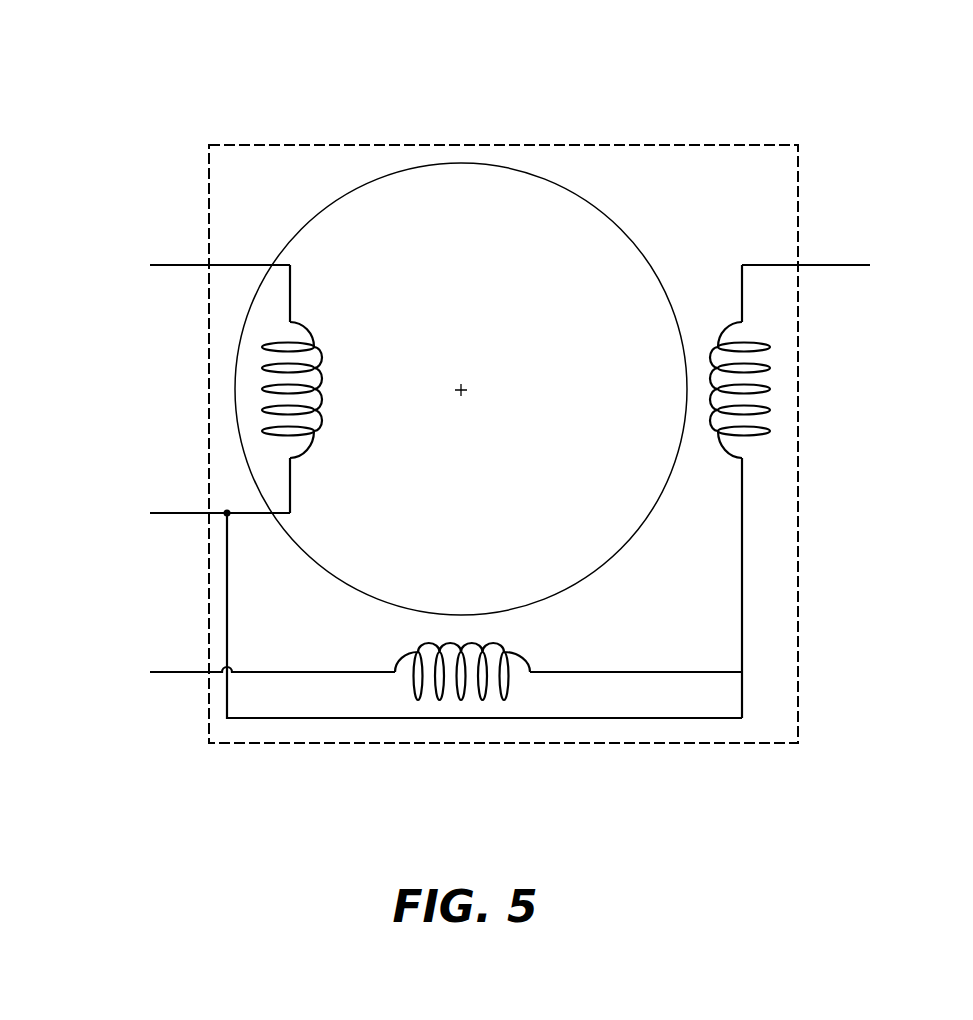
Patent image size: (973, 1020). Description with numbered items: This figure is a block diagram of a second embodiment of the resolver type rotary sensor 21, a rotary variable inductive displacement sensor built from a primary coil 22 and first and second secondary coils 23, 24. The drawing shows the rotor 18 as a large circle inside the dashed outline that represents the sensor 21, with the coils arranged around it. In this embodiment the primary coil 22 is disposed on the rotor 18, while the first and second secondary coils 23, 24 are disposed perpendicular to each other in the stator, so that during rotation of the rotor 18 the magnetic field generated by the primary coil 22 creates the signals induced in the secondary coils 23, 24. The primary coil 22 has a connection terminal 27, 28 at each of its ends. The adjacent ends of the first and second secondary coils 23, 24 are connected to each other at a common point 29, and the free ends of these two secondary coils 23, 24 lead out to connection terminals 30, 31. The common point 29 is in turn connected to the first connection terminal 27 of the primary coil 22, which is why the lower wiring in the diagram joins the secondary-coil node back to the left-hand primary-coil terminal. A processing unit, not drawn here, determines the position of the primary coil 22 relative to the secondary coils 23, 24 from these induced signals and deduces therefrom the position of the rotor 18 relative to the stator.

The rotor 18 is at (470, 163).
The resolver type rotary sensor 21 is at (838, 116).
The primary coil 22 is at (256, 388).
The first secondary coil 23 is at (777, 377).
The second secondary coil 24 is at (450, 700).
The first connection terminal of the primary coil 27 is at (136, 514).
The connection terminal of the primary coil 28 is at (136, 266).
The common point 29 is at (744, 672).
The connection terminal 30 is at (872, 265).
The connection terminal 31 is at (136, 673).